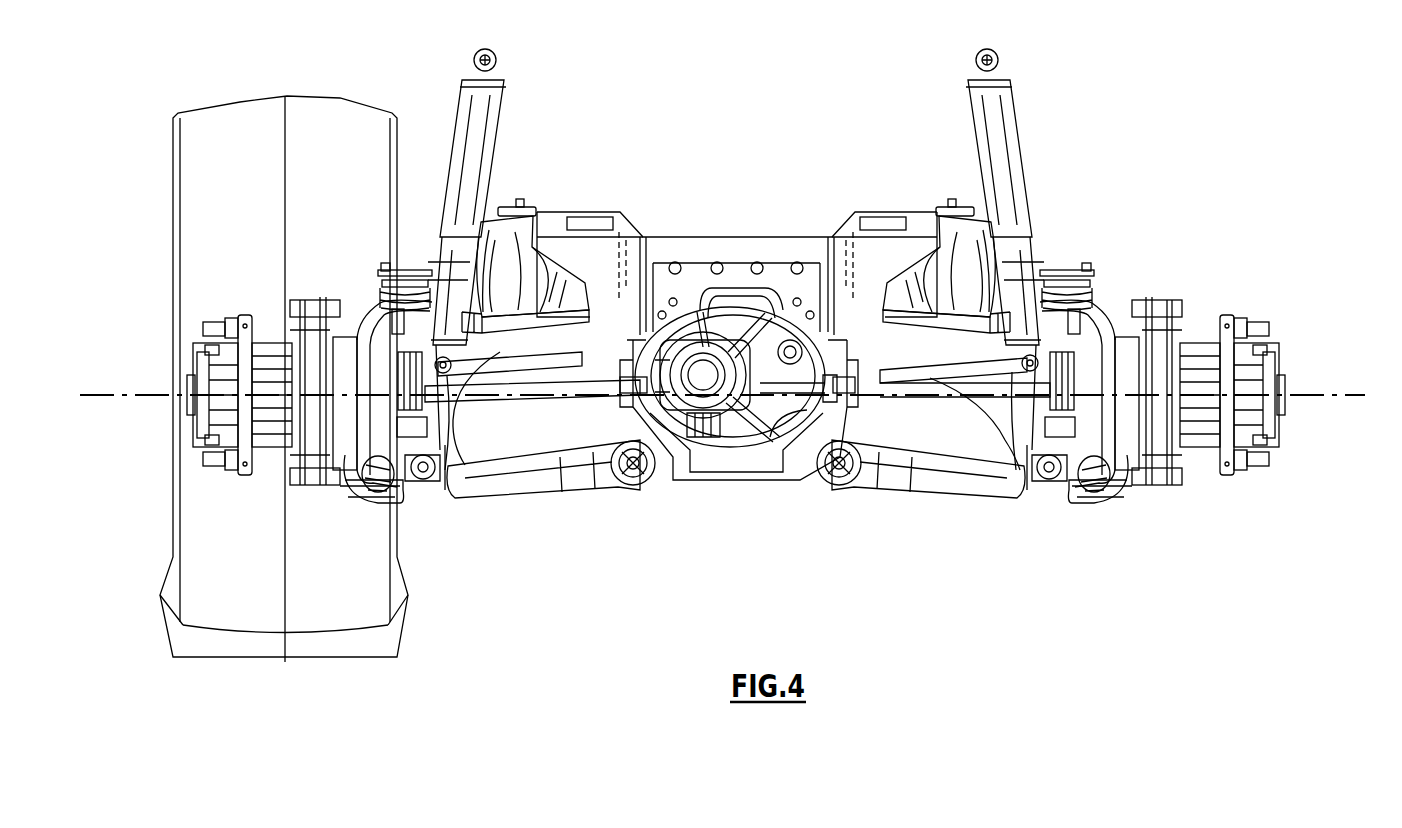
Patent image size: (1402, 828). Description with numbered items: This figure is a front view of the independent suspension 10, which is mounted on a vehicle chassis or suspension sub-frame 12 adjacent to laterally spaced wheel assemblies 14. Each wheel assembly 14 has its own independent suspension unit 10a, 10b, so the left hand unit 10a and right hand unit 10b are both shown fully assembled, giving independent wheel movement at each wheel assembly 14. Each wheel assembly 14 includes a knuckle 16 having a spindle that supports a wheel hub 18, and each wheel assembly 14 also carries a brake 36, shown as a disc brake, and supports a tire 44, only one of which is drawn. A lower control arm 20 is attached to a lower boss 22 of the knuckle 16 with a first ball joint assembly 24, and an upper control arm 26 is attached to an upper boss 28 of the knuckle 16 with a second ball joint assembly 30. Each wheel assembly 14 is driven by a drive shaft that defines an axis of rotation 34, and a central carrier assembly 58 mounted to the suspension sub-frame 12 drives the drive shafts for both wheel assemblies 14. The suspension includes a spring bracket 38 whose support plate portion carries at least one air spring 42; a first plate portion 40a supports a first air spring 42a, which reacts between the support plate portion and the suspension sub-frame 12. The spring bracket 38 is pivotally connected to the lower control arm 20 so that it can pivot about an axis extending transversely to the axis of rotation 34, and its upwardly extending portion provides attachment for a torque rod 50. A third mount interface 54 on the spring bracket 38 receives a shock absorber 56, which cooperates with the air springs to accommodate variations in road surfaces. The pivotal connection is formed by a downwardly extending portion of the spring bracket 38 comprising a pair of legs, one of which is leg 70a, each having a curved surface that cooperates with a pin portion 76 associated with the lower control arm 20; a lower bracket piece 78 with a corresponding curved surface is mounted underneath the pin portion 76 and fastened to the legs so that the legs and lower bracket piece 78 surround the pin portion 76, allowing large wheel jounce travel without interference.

The independent suspension 10 is at (778, 80).
The independent suspension unit 10a is at (538, 545).
The independent suspension unit 10b is at (965, 555).
The suspension sub-frame 12 is at (688, 235).
The wheel assembly 14 is at (245, 292).
The knuckle 16 is at (363, 305).
The wheel hub 18 is at (242, 477).
The lower control arm 20 is at (542, 480).
The lower boss 22 is at (377, 505).
The first ball joint assembly 24 is at (357, 507).
The upper control arm 26 is at (433, 250).
The upper boss 28 is at (371, 301).
The second ball joint assembly 30 is at (407, 270).
The axis of rotation 34 is at (1312, 393).
The brake 36 is at (303, 487).
The spring bracket 38 is at (453, 417).
The first plate portion 40a is at (492, 388).
The air spring 42 is at (489, 214).
The first air spring 42a is at (736, 272).
The tire 44 is at (330, 100).
The torque rod 50 is at (487, 317).
The third mount interface 54 is at (477, 357).
The shock absorber 56 is at (487, 105).
The central carrier assembly 58 is at (735, 400).
The leg 70a is at (463, 462).
The pin portion 76 is at (405, 487).
The lower bracket piece 78 is at (423, 480).